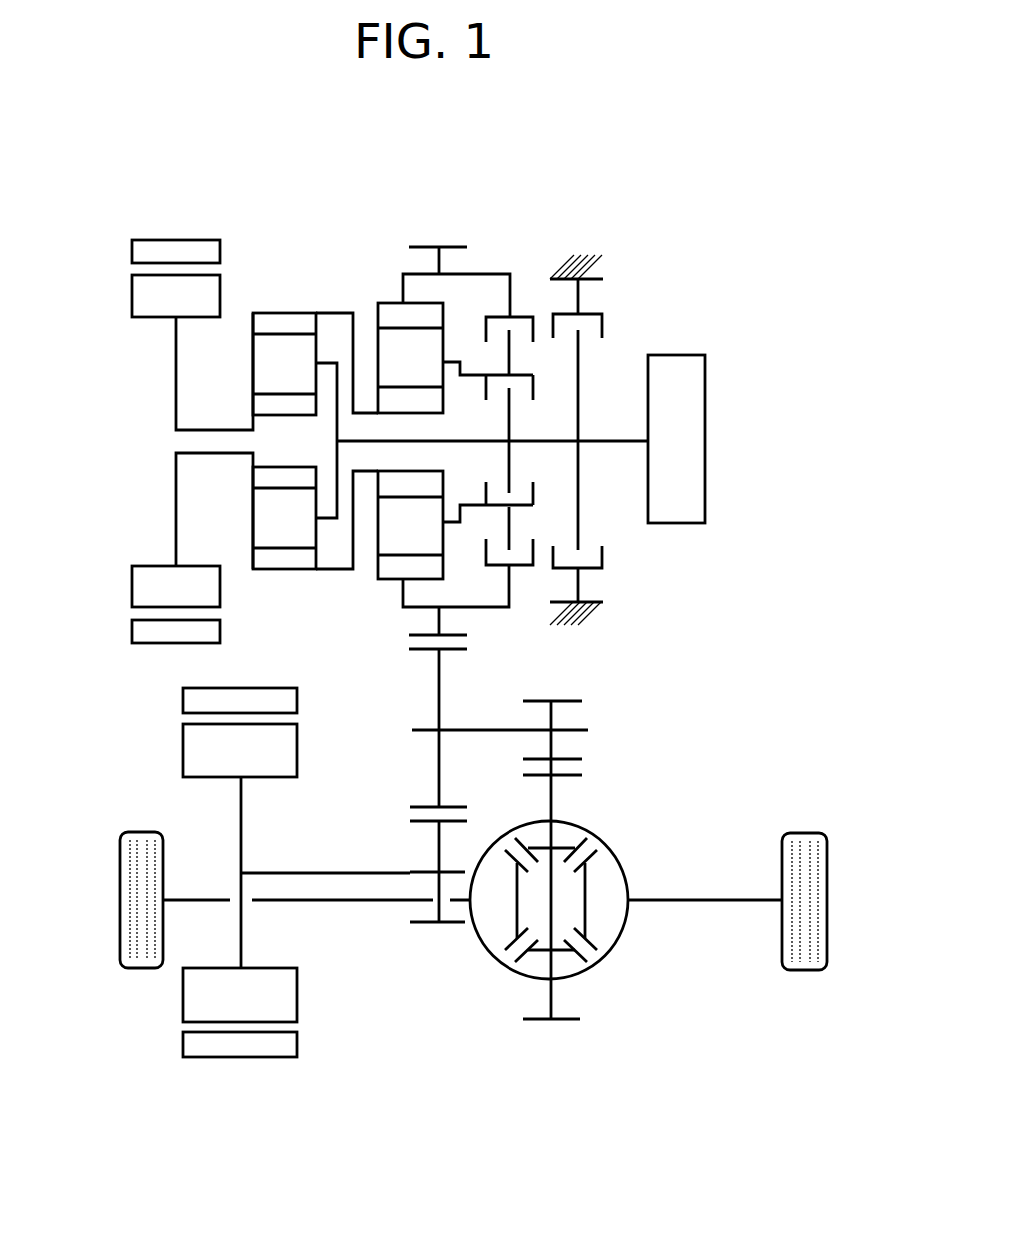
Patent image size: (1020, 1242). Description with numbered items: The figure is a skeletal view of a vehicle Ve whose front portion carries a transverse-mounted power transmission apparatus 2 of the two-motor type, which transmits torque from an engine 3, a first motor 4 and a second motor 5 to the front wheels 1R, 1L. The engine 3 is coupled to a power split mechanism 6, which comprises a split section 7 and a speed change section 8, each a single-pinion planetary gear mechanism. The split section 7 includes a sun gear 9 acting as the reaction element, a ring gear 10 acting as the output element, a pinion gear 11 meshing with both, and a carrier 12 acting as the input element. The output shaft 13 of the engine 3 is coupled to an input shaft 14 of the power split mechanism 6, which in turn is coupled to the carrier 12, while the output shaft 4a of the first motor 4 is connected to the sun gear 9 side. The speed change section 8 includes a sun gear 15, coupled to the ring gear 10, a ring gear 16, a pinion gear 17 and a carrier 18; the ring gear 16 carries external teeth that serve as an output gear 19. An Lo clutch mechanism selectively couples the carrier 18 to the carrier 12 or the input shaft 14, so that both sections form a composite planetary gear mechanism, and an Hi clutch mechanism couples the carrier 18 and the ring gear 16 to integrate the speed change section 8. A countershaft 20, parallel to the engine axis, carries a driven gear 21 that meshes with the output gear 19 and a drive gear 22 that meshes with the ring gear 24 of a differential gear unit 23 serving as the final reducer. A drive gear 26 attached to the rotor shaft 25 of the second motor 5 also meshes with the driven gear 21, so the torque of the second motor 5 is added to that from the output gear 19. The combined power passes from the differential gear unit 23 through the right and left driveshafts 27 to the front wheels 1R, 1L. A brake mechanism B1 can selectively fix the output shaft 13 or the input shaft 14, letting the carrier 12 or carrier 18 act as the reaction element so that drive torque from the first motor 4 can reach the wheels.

The vehicle Ve is at (634, 220).
The front wheel 1L is at (120, 895).
The front wheel 1R is at (800, 832).
The power transmission apparatus 2 is at (100, 408).
The engine 3 is at (682, 355).
The first motor 4 is at (115, 285).
The output shaft 4a is at (212, 429).
The second motor 5 is at (148, 1014).
The power split mechanism 6 is at (390, 226).
The split section 7 is at (290, 285).
The speed change section 8 is at (382, 280).
The sun gear 9 is at (253, 478).
The ring gear 10 is at (290, 564).
The pinion gear 11 is at (262, 530).
The carrier 12 is at (334, 427).
The output shaft 13 is at (612, 440).
The input shaft 14 is at (549, 440).
The sun gear 15 is at (417, 403).
The ring gear 16 is at (433, 313).
The pinion gear 17 is at (387, 363).
The carrier 18 is at (473, 374).
The output gear 19 is at (409, 632).
The countershaft 20 is at (585, 728).
The driven gear 21 is at (412, 652).
The drive gear 22 is at (568, 698).
The differential gear unit 23 is at (634, 855).
The ring gear 24 is at (585, 773).
The rotor shaft 25 is at (318, 870).
The drive gear 26 is at (412, 824).
The driveshafts 27 is at (352, 903).
The brake mechanism B1 is at (611, 297).